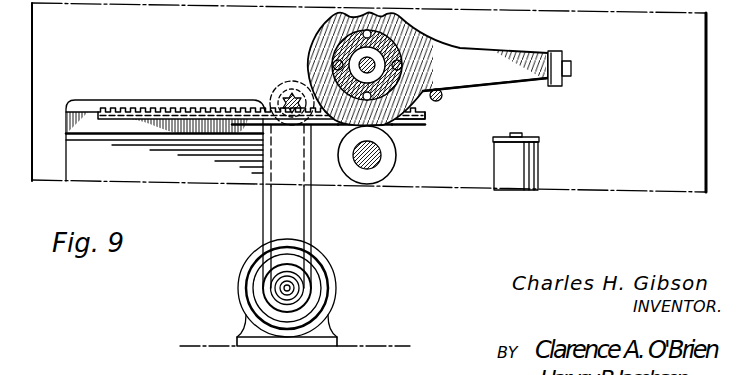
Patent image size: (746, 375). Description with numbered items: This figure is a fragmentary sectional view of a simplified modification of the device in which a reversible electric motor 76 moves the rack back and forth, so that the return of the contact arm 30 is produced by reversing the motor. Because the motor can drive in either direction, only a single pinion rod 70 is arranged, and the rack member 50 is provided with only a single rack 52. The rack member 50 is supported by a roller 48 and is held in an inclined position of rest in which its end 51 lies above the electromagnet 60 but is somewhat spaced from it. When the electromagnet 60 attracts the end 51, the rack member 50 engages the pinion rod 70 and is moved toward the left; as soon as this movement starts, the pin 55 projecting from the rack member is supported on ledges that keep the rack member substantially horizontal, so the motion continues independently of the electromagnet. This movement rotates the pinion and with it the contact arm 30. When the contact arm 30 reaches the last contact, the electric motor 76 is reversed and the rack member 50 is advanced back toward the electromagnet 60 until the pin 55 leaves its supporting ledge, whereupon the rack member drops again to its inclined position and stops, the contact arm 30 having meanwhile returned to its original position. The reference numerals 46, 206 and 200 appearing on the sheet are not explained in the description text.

The contact arm 30 is at (478, 43).
The roller shaft 46 is at (381, 161).
The roller 48 is at (390, 173).
The rack member 50 is at (392, 128).
The end of the rack member 51 is at (428, 121).
The rack 52 is at (220, 110).
The pin 55 is at (148, 111).
The electromagnet 60 is at (538, 168).
The pinion rod 70 is at (290, 93).
The electric motor 76 is at (318, 298).
The frame member 206 is at (475, 4).
The frame 200 is at (637, 4).